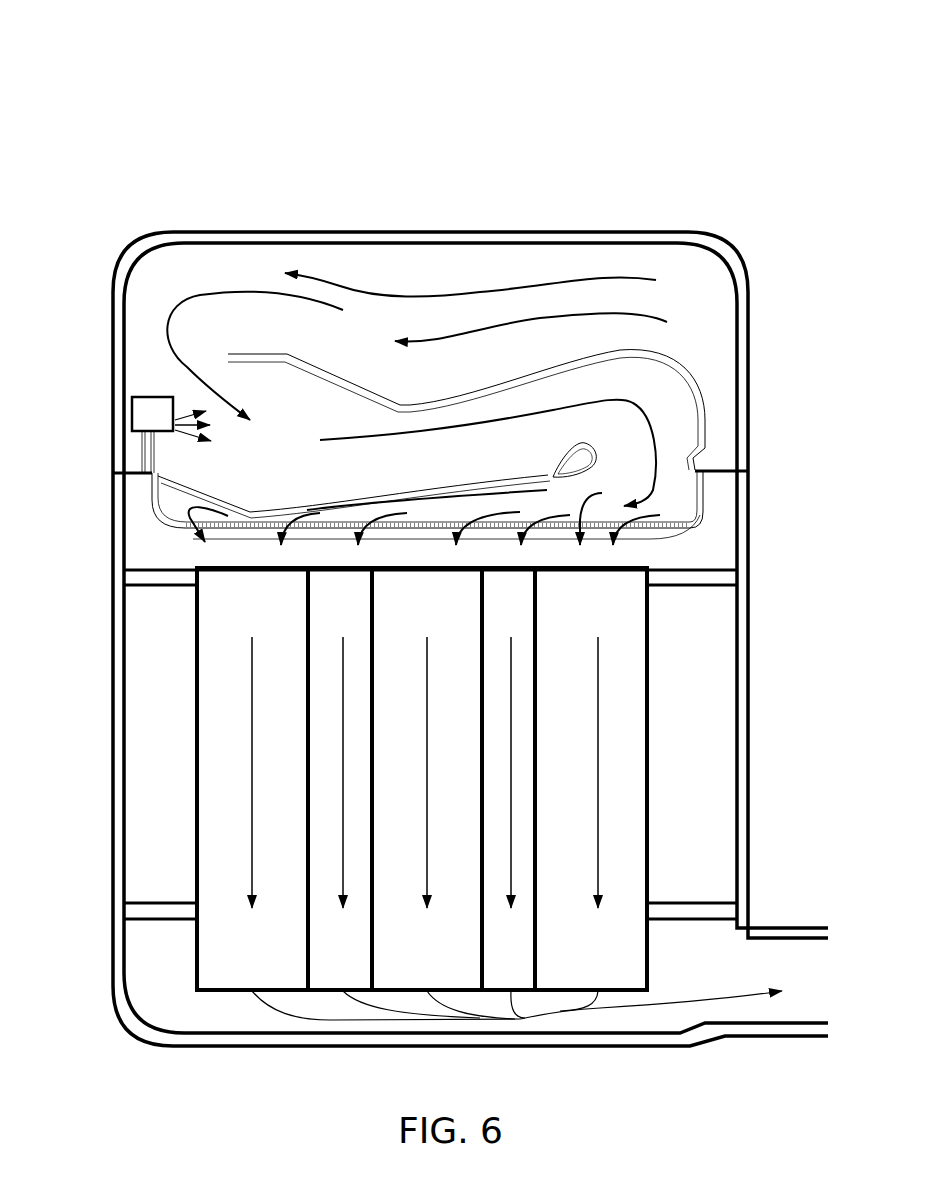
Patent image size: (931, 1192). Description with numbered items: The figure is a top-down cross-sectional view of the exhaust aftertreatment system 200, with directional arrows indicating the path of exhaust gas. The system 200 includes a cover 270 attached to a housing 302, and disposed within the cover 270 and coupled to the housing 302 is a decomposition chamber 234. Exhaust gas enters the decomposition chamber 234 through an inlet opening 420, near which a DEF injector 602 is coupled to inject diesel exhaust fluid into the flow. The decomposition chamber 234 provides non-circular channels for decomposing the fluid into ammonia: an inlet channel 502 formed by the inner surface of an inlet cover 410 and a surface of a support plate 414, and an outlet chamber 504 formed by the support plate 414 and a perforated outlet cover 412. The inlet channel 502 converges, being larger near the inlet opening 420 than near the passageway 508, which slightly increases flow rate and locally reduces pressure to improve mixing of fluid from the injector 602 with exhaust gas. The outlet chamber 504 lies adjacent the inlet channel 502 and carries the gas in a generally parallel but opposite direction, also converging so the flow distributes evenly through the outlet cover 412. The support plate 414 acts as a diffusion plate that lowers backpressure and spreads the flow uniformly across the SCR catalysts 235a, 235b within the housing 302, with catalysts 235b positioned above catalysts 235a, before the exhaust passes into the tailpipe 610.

The system 200 is at (153, 66).
The cover 270 is at (313, 232).
The housing 302 is at (113, 522).
The outlet cover 412 is at (640, 534).
The support plate 414 is at (290, 506).
The decomposition chamber 234 is at (303, 365).
The inlet cover 410 is at (415, 396).
The passageway 508 is at (668, 443).
The DEF injector 602 is at (165, 422).
The inlet opening 420 is at (152, 362).
The inlet channel 502 is at (458, 466).
The outlet chamber 504 is at (463, 522).
The SCR catalysts 235a is at (367, 619).
The SCR catalysts 235b is at (277, 619).
The tailpipe 610 is at (790, 979).